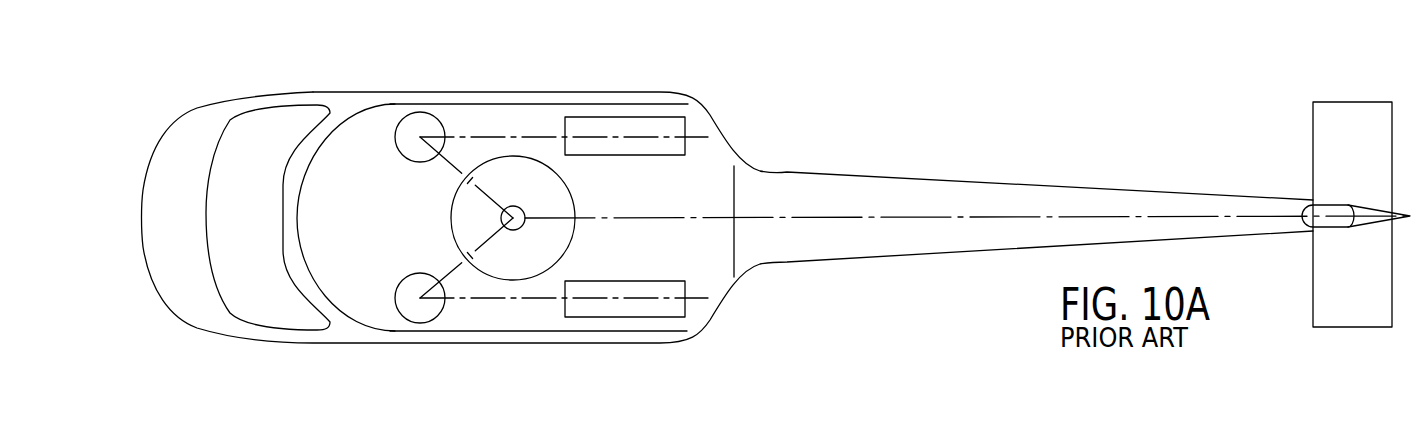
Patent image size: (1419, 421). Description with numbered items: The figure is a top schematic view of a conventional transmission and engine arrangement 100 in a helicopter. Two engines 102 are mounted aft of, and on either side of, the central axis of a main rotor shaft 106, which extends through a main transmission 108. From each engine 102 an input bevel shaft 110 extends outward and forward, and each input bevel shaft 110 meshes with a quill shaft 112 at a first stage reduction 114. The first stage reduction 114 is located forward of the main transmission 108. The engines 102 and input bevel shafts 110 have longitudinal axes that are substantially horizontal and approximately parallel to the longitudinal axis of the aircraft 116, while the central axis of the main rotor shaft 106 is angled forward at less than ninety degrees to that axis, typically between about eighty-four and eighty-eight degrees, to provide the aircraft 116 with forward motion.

The transmission and engine arrangement 100 is at (776, 61).
The engine 102 is at (675, 125).
The main rotor shaft 106 is at (515, 230).
The main transmission 108 is at (525, 167).
The input bevel shaft 110 is at (530, 298).
The quill shaft 112 is at (448, 165).
The first stage reduction 114 is at (430, 114).
The aircraft 116 is at (877, 228).